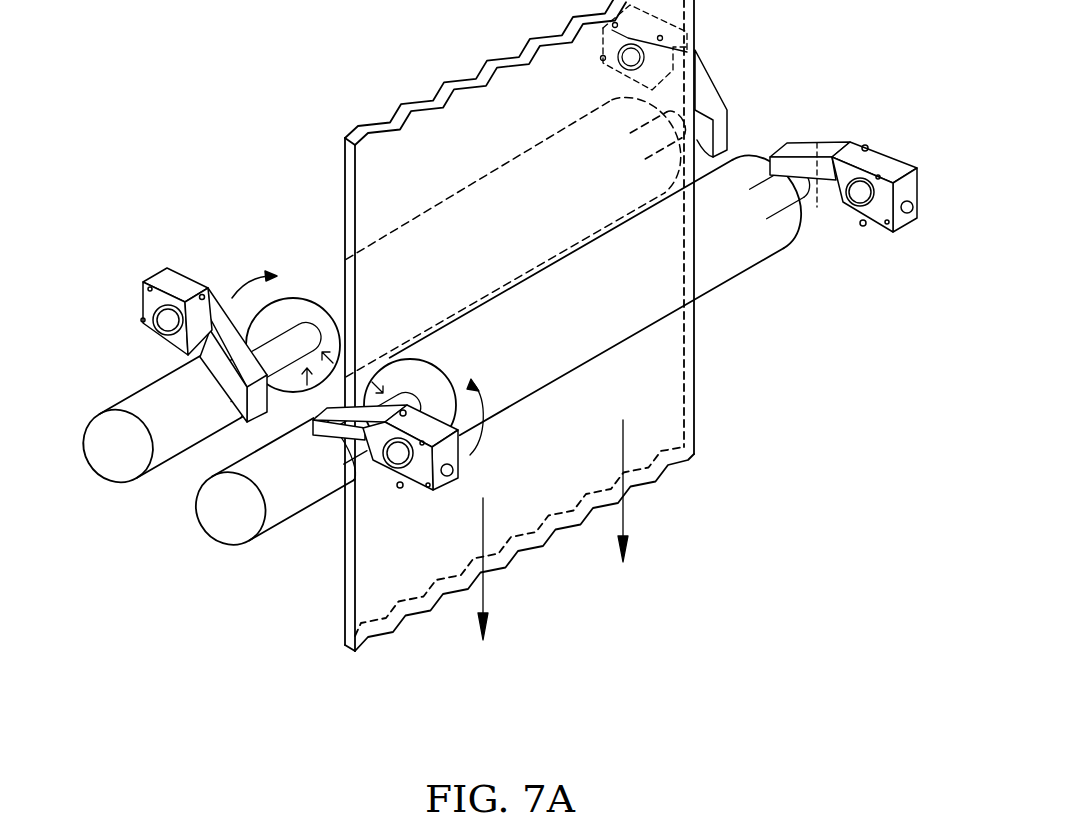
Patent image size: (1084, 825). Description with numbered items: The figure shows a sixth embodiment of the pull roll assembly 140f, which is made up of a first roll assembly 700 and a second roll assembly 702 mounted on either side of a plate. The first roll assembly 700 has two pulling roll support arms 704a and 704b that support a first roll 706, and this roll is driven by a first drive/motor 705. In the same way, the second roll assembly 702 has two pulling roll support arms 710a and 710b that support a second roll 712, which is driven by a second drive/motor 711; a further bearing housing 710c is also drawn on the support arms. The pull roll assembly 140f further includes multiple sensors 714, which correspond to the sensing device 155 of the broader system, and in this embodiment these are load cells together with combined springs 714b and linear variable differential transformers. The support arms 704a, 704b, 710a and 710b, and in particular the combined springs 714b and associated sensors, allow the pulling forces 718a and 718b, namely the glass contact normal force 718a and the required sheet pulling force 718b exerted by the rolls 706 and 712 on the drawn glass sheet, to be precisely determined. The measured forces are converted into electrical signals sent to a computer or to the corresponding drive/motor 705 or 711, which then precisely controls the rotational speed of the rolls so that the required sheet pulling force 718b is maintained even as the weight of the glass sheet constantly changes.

The first roll assembly 700 is at (873, 111).
The second roll assembly 702 is at (727, 59).
The pulling roll support arm 704a is at (350, 533).
The pulling roll support arm 704b is at (877, 141).
The first drive/motor 705 is at (215, 531).
The first roll 706 is at (733, 284).
The pulling roll support arm 710a is at (173, 345).
The pulling roll support arm 710b is at (727, 110).
The bearing housing 710c is at (418, 478).
The second drive/motor 711 is at (112, 472).
The second roll 712 is at (327, 268).
The sensors 714 is at (268, 572).
The device 155 is at (268, 625).
The combined springs 714b is at (600, 58).
The glass contact normal force 718a is at (345, 342).
The required sheet pulling force 718b is at (305, 384).
The pull roll assembly 140f is at (843, 58).